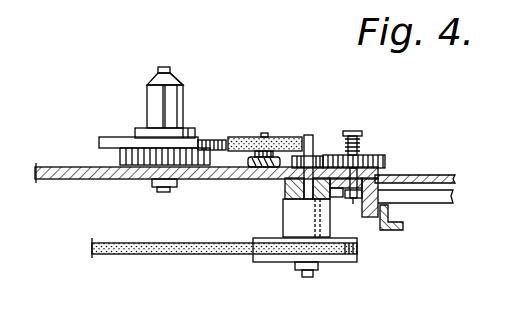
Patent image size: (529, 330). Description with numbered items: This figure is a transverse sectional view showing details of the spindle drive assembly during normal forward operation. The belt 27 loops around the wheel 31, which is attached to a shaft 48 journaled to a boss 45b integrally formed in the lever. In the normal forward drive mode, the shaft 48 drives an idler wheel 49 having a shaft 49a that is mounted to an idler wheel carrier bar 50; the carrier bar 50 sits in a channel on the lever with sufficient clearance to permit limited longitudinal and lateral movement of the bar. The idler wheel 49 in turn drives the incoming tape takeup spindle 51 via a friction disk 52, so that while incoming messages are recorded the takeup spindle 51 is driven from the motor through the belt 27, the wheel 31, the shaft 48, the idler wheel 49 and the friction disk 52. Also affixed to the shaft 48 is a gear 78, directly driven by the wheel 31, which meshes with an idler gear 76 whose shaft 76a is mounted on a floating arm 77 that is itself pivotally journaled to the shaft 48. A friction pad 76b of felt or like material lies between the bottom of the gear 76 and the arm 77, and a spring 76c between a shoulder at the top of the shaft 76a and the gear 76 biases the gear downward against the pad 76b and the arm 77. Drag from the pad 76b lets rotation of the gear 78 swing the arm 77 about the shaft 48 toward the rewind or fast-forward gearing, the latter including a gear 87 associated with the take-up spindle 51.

The belt 27 is at (180, 254).
The wheel 31 is at (270, 263).
The boss 45b is at (286, 214).
The shaft 48 is at (314, 140).
The idler wheel 49 is at (238, 138).
The shaft 49a is at (265, 133).
The idler wheel carrier bar 50 is at (248, 163).
The incoming tape takeup spindle 51 is at (184, 100).
The friction disk 52 is at (107, 137).
The idler gear 76 is at (382, 156).
The shaft 76a is at (355, 203).
The friction pad 76b is at (378, 173).
The spring 76c is at (364, 143).
The floating arm 77 is at (388, 178).
The gear 78 is at (320, 152).
The gear 87 is at (100, 152).